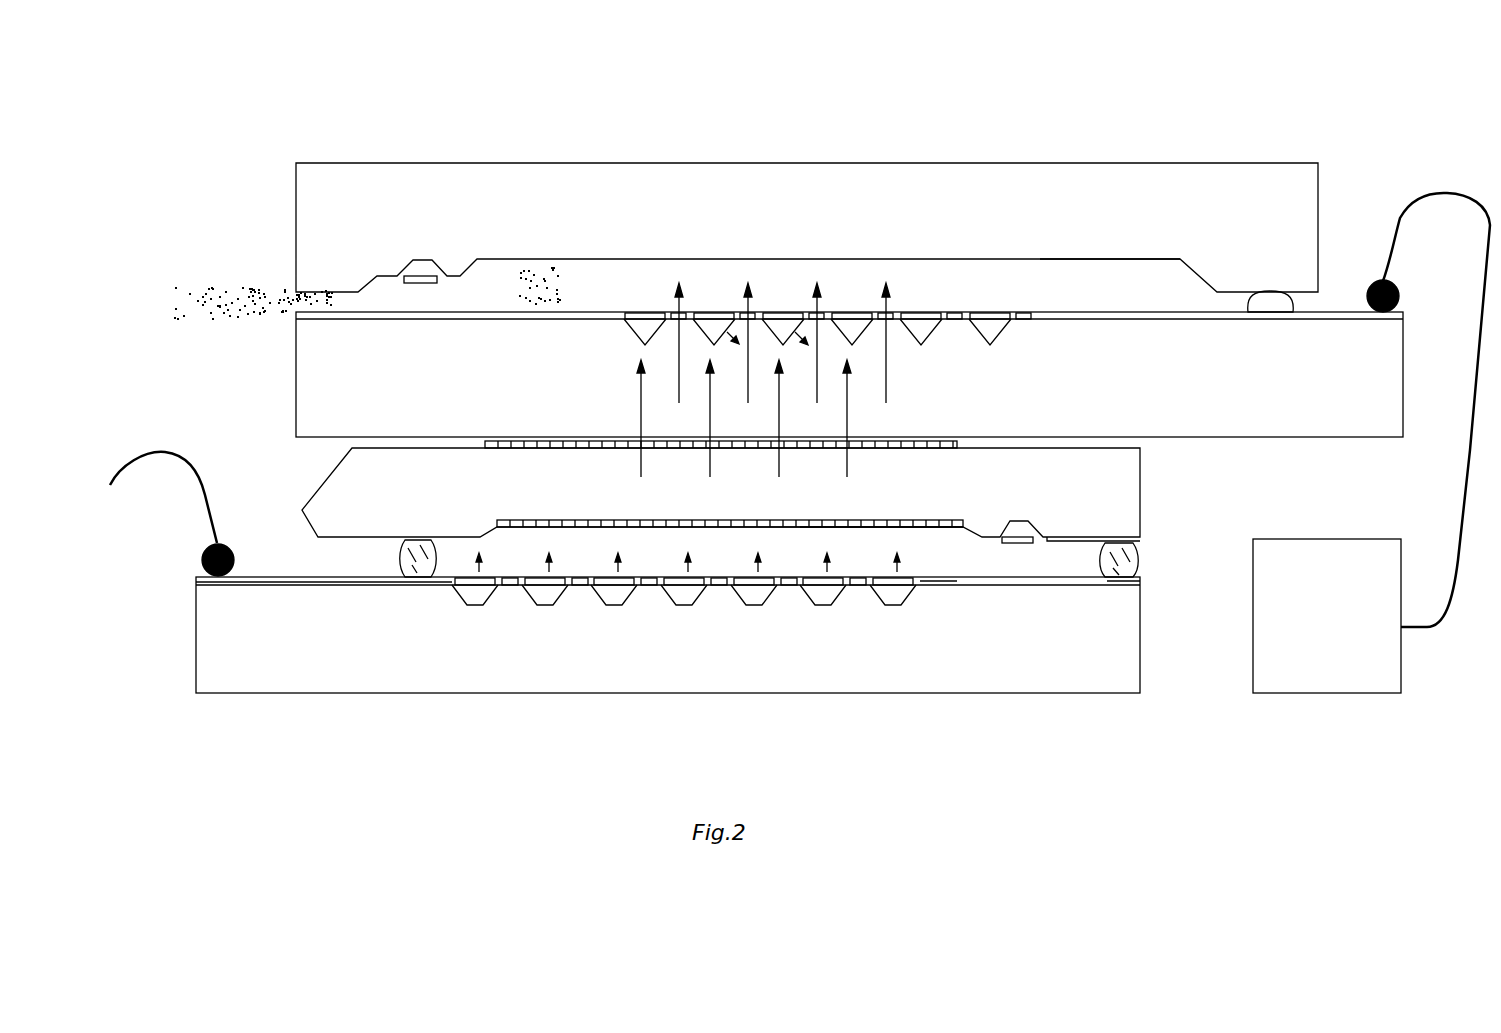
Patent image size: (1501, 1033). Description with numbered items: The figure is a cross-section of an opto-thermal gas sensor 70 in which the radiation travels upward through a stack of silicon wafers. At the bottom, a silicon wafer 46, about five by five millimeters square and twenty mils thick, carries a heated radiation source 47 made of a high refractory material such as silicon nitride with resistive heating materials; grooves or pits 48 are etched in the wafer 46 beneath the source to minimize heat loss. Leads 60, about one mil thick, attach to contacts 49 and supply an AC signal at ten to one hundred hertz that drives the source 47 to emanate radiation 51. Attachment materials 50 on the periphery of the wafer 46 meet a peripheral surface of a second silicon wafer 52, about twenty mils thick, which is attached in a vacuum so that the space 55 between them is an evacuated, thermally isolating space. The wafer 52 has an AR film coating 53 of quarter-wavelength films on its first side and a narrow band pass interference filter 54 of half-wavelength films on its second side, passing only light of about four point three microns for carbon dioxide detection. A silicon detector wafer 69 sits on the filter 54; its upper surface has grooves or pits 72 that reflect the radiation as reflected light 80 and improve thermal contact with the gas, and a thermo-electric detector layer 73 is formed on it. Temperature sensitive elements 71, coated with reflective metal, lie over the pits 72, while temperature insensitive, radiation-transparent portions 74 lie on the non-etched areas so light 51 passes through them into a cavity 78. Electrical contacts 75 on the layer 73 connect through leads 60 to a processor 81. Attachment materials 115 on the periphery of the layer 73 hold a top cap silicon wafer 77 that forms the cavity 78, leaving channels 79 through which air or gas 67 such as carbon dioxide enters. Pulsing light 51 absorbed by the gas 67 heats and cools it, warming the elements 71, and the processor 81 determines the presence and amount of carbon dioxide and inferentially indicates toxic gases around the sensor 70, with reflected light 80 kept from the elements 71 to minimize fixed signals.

The silicon wafer 46 is at (712, 674).
The heated radiation source 47 is at (556, 577).
The grooves or pits 48 is at (697, 596).
The contacts 49 is at (205, 575).
The attachment materials 50 is at (401, 558).
The radiation 51 is at (750, 291).
The silicon wafer 52 is at (827, 509).
The AR film coating 53 is at (838, 528).
The narrow band pass IF multiple stack layer 54 is at (916, 449).
The evacuated thermally isolating space 55 is at (809, 556).
The leads 60 is at (1398, 219).
The air and/or gas 67 is at (187, 322).
The silicon detector wafer 69 is at (296, 393).
The opto-thermal gas sensor 70 is at (998, 126).
The temperature sensitive elements 71 is at (641, 312).
The grooves or pits 72 is at (696, 319).
The thermo-electric temperature sensor or detector layer 73 is at (425, 311).
The temperature insensitive and radiation transparent portions 74 is at (687, 312).
The electrical contacts 75 is at (1401, 303).
The top cap silicon wafer 77 is at (848, 209).
The cavity 78 is at (1162, 304).
The vias, channels or holes 79 is at (290, 293).
The reflected light 80 is at (632, 336).
The processor 81 is at (1338, 660).
The attachment materials 115 is at (1272, 302).